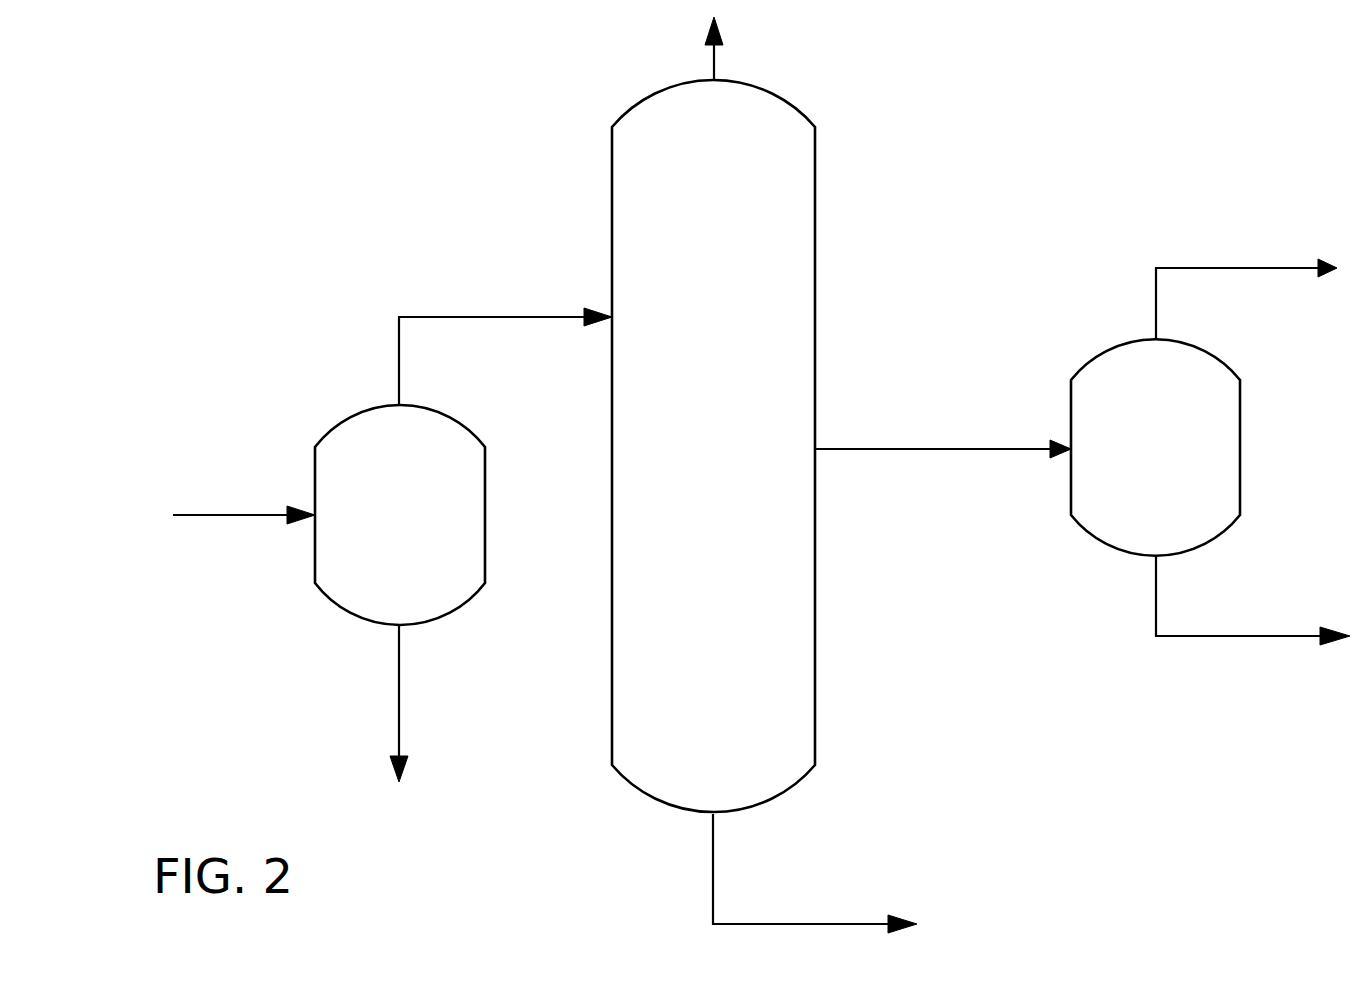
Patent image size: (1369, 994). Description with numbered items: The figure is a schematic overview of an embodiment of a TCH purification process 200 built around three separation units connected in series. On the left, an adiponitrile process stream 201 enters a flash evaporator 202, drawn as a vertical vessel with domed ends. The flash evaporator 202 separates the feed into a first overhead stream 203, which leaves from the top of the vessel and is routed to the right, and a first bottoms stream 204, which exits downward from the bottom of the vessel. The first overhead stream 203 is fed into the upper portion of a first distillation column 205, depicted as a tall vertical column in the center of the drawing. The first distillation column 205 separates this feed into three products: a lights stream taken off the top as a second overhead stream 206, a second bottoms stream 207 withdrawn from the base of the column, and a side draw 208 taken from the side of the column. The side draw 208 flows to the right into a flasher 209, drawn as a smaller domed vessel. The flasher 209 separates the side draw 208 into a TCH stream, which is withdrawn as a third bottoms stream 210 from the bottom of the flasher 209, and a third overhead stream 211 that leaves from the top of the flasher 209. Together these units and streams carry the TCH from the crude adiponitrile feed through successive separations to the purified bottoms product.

The TCH purification process 200 is at (278, 127).
The adiponitrile process stream 201 is at (192, 515).
The flash evaporator 202 is at (318, 597).
The first overhead stream 203 is at (416, 317).
The first bottoms stream 204 is at (399, 691).
The first distillation column 205 is at (628, 196).
The second overhead stream 206 is at (714, 60).
The second bottoms stream 207 is at (713, 857).
The side draw 208 is at (985, 449).
The flasher 209 is at (1092, 542).
The third bottoms stream 210 is at (1178, 636).
The third overhead stream 211 is at (1155, 277).